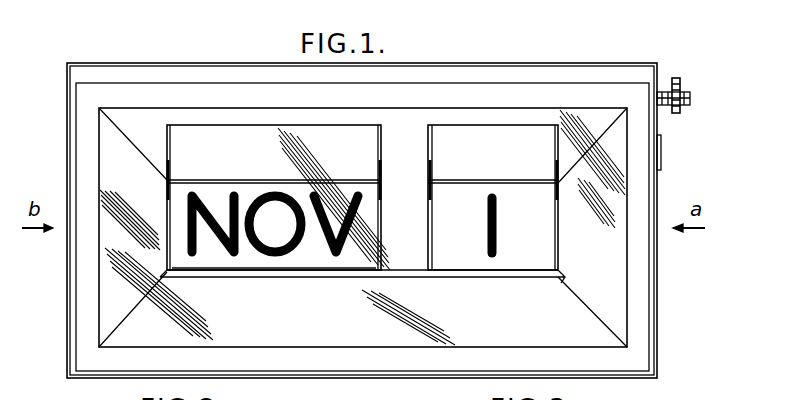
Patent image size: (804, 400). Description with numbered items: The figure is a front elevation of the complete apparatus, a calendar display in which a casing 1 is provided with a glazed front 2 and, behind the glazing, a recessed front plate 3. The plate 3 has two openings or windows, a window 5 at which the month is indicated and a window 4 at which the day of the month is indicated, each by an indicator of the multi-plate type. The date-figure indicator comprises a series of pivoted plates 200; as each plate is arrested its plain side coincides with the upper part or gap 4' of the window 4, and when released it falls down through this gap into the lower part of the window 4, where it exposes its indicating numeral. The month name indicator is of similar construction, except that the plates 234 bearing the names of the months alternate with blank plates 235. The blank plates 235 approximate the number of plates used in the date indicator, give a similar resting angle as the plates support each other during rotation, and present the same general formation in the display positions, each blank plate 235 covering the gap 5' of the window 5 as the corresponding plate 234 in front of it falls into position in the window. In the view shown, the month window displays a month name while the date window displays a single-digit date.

The casing 1 is at (166, 75).
The glazed front 2 is at (138, 336).
The recessed front plate 3 is at (117, 292).
The window 4 is at (506, 197).
The gap 4' is at (493, 107).
The window 5 is at (362, 151).
The gap 5' is at (274, 107).
The plates 200 is at (503, 175).
The plates 234 is at (316, 264).
The blank plates 235 is at (357, 136).